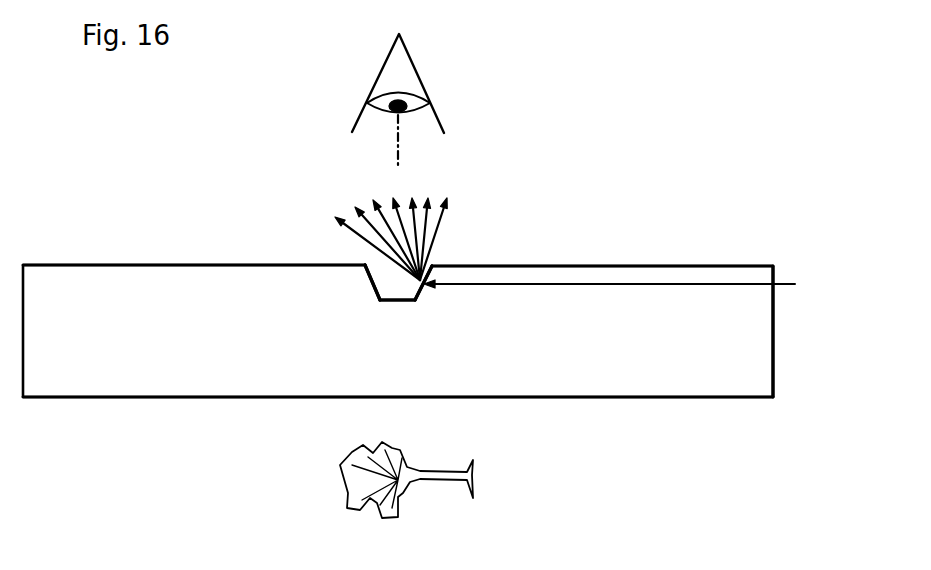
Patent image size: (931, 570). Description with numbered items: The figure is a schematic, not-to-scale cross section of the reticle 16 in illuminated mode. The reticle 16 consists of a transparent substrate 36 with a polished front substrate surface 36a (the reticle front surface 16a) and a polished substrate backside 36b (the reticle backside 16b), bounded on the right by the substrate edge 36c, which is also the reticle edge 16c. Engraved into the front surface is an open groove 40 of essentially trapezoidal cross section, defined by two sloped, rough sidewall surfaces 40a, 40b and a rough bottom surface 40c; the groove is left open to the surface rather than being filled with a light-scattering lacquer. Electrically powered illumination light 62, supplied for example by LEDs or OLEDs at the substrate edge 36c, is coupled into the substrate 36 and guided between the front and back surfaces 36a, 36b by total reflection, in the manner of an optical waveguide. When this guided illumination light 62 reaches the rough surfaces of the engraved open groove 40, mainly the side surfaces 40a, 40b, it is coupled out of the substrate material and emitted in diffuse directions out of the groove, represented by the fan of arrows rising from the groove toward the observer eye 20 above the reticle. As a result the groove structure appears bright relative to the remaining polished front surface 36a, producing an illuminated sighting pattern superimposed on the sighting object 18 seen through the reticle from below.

The reticle 16 is at (773, 338).
The reticle front surface 16a is at (738, 265).
The reticle backside 16b is at (726, 400).
The reticle edge 16c is at (775, 273).
The sighting object 18 is at (438, 483).
The observer eye 20 is at (427, 82).
The substrate 36 is at (773, 372).
The substrate surface 36a is at (660, 265).
The substrate backside 36b is at (653, 400).
The substrate edge 36c is at (773, 387).
The engraved open groove 40 is at (413, 300).
The first sidewall surface 40a is at (371, 280).
The second sidewall surface 40b is at (418, 290).
The bottom surface 40c is at (390, 300).
The electrically powered illumination light 62 is at (795, 285).